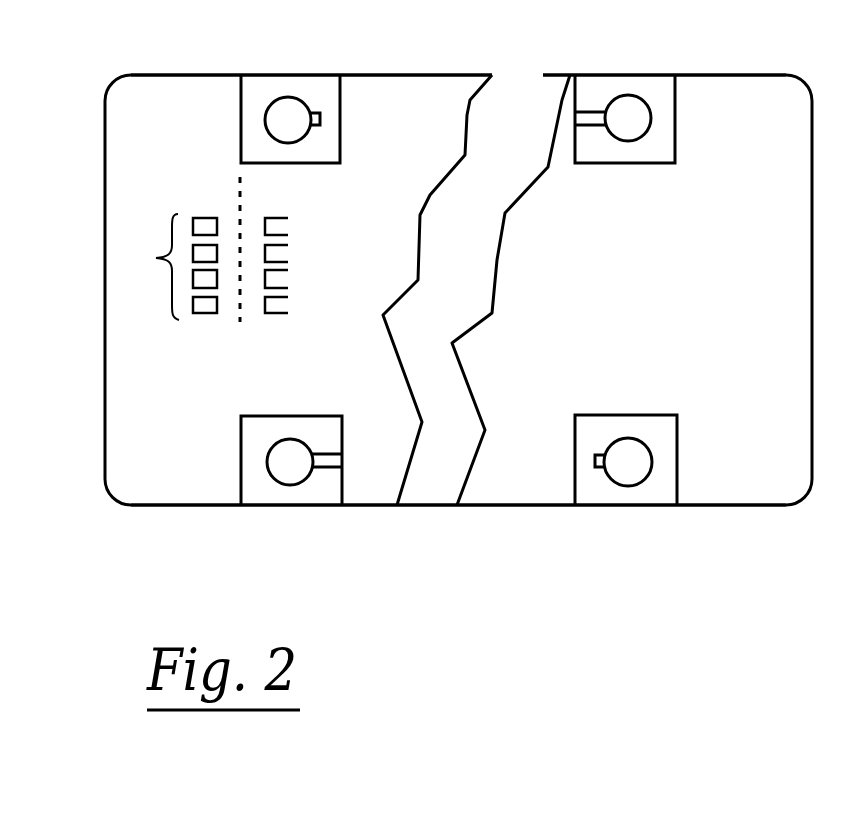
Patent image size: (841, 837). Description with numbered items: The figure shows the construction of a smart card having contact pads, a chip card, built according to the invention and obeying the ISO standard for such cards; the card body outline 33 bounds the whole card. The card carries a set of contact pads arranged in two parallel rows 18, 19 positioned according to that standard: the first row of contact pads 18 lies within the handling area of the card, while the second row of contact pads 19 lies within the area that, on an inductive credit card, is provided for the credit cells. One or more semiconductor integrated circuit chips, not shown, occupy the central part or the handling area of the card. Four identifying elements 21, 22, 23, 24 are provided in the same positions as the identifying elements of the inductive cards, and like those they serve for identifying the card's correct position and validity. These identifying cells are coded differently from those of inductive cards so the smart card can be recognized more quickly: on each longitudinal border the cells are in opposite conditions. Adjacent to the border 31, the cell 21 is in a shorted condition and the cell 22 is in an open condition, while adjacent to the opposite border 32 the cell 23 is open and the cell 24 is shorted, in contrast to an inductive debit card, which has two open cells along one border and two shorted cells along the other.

The first row of contact pads 18 is at (153, 255).
The second row of contact pads 19 is at (306, 262).
The identifying element 21 is at (259, 97).
The identifying element 22 is at (660, 97).
The identifying element 23 is at (252, 429).
The identifying element 24 is at (663, 443).
The longitudinal border 31 is at (458, 37).
The longitudinal border 32 is at (547, 510).
The substrate outline 33 is at (105, 335).